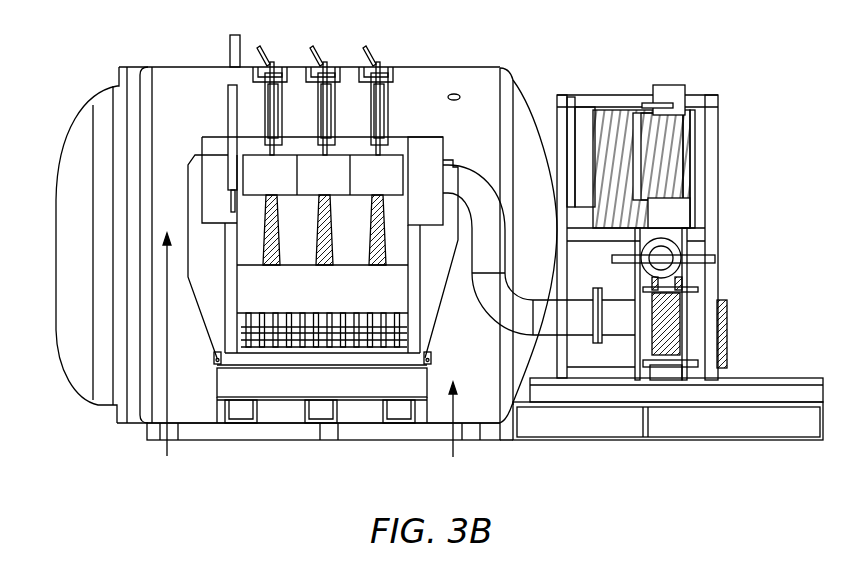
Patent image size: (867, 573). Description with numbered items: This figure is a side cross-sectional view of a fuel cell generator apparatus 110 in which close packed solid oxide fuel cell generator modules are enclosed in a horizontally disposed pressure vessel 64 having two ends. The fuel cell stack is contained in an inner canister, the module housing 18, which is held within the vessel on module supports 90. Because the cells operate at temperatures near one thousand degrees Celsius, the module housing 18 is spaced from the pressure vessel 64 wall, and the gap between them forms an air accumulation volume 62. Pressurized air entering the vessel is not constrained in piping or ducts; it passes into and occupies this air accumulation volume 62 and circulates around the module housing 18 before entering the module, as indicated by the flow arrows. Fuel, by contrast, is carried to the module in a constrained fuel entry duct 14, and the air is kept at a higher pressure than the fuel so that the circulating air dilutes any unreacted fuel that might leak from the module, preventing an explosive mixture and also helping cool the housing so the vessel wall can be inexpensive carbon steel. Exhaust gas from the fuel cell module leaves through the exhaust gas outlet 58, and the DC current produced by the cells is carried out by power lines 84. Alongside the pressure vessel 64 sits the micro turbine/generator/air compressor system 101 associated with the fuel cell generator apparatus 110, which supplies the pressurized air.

The fuel entry duct 14 is at (352, 54).
The module housing 18 is at (418, 258).
The exhaust gas outlet 58 is at (502, 315).
The air accumulation volume 62 is at (167, 456).
The pressure vessel 64 is at (93, 412).
The power lines 84 is at (229, 46).
The module support 90 is at (243, 412).
The micro turbine/generator/air compressor system 101 is at (738, 195).
The fuel cell generator apparatus 110 is at (473, 37).